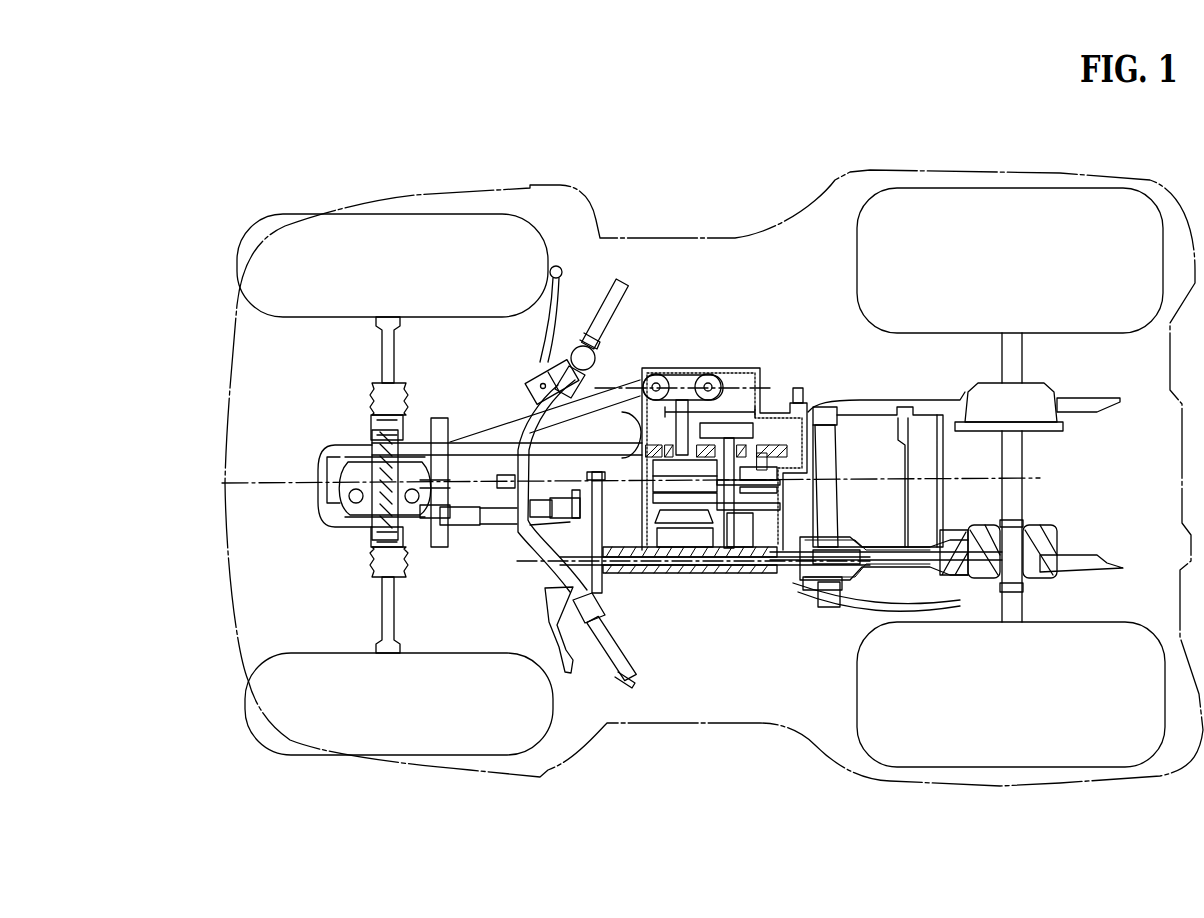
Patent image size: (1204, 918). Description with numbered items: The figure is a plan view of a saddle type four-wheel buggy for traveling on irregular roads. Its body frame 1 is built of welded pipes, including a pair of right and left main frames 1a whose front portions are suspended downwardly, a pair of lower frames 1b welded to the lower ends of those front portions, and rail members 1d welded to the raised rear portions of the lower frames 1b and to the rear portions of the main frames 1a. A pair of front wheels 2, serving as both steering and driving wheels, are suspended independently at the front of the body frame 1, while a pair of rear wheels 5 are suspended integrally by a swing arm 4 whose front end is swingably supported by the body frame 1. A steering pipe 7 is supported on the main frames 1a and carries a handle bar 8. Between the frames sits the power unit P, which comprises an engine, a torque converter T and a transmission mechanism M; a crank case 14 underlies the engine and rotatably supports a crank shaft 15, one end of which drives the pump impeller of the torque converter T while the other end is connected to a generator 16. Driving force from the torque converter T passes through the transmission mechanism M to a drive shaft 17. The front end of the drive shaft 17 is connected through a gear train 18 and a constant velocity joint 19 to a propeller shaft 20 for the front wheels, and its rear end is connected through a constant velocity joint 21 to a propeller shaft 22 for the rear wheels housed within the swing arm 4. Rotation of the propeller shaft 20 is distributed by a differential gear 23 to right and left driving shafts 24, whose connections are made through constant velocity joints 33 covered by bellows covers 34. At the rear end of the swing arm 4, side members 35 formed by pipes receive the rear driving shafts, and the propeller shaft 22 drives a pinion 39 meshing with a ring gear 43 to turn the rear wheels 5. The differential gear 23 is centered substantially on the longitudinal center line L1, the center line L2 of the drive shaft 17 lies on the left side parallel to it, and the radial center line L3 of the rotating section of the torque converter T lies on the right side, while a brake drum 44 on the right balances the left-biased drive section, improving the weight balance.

The body frame 1 is at (325, 445).
The main frames 1a is at (460, 442).
The lower frames 1b is at (502, 438).
The rail members 1d is at (852, 400).
The front wheels 2 is at (385, 222).
The swing arm 4 is at (915, 575).
The rear wheels 5 is at (1055, 196).
The steering pipe 7 is at (496, 484).
The handle bar 8 is at (548, 378).
The crank case 14 is at (645, 430).
The crank shaft 15 is at (683, 430).
The generator 16 is at (696, 573).
The drive shaft 17 is at (750, 575).
The gear train 18 is at (605, 590).
The constant velocity joint 19 is at (566, 499).
The propeller shaft for front wheels 20 is at (488, 527).
The constant velocity joint 21 is at (820, 605).
The propeller shaft for rear wheels 22 is at (910, 606).
The differential gear 23 is at (362, 516).
The driving shafts 24 is at (382, 348).
The constant velocity joints 33 is at (376, 420).
The bellows cover 34 is at (398, 394).
The side members 35 is at (1023, 493).
The pinion 39 is at (985, 580).
The ring gear 43 is at (1040, 580).
The brake drum 44 is at (1048, 395).
The longitudinal center line L1 is at (285, 483).
The center line of drive shaft L2 is at (654, 574).
The radial center line of torque converter rotating section L3 is at (628, 385).
The transmission mechanism M is at (800, 500).
The power unit P is at (765, 367).
The torque converter T is at (700, 383).